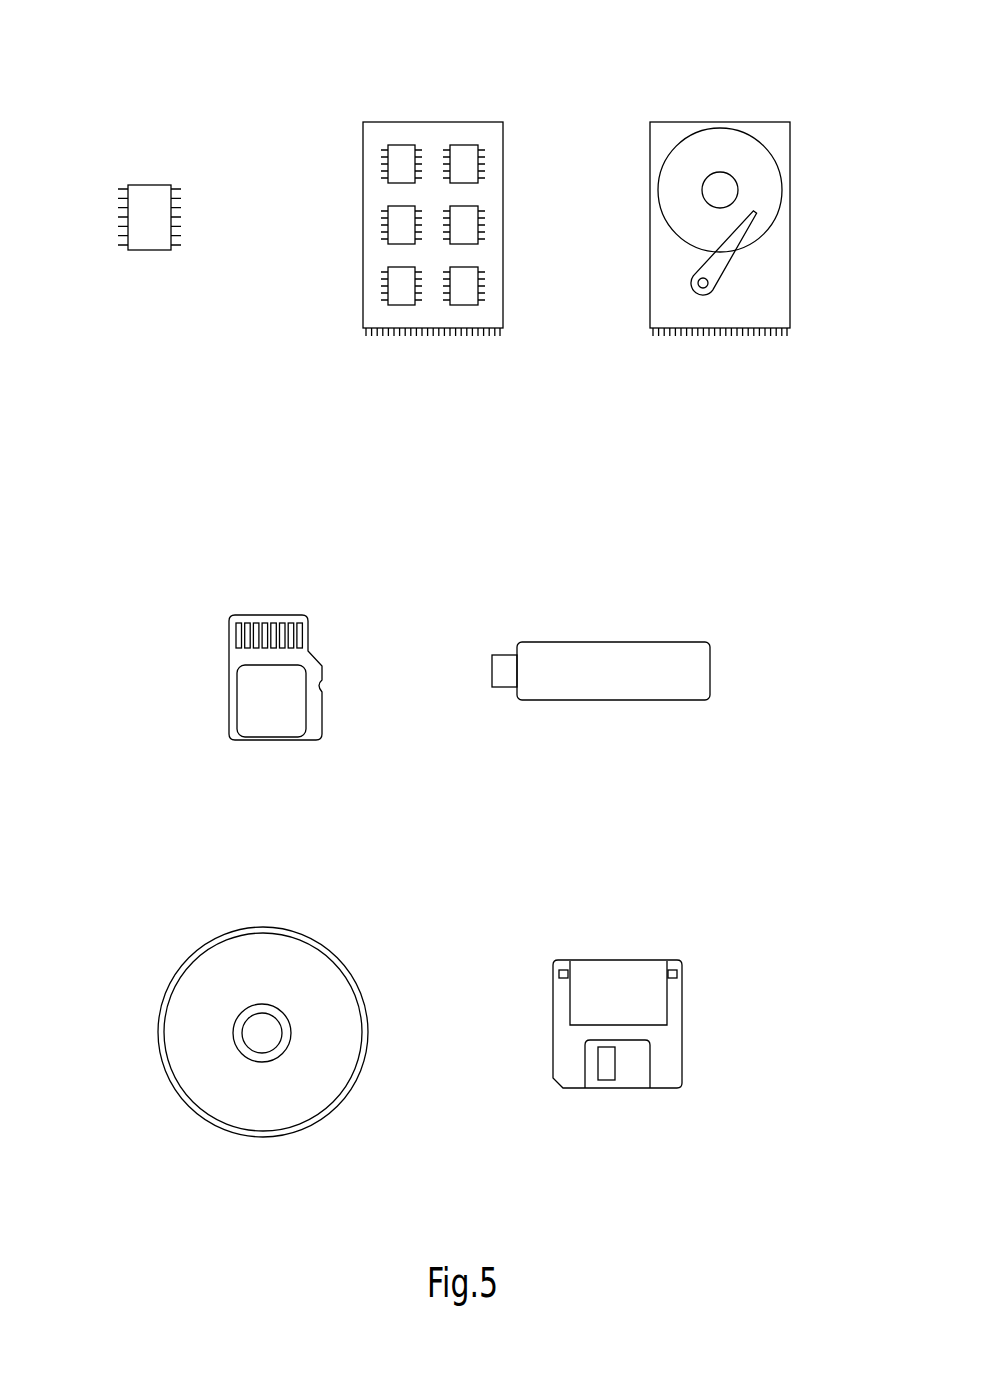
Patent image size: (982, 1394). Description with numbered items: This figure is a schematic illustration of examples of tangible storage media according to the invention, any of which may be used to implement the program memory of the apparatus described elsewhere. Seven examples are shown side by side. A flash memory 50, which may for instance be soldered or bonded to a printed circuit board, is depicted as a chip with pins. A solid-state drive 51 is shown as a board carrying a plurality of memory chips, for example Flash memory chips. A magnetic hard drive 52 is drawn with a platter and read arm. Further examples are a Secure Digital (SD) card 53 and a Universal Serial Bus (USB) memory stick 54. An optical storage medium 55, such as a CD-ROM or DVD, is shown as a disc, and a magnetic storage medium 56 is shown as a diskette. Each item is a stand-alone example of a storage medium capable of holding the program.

The flash memory 50 is at (175, 147).
The solid-state drive 51 is at (503, 82).
The magnetic hard drive 52 is at (793, 83).
The Secure Digital (SD) card 53 is at (312, 583).
The Universal Serial Bus (USB) memory stick 54 is at (683, 605).
The optical storage medium 55 is at (348, 925).
The magnetic storage medium 56 is at (677, 923).